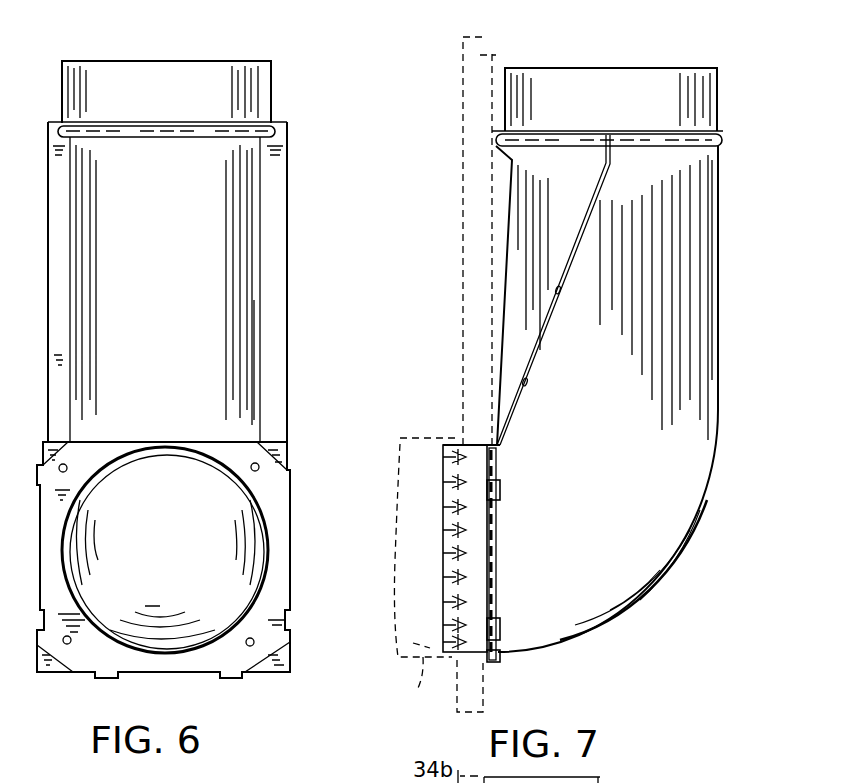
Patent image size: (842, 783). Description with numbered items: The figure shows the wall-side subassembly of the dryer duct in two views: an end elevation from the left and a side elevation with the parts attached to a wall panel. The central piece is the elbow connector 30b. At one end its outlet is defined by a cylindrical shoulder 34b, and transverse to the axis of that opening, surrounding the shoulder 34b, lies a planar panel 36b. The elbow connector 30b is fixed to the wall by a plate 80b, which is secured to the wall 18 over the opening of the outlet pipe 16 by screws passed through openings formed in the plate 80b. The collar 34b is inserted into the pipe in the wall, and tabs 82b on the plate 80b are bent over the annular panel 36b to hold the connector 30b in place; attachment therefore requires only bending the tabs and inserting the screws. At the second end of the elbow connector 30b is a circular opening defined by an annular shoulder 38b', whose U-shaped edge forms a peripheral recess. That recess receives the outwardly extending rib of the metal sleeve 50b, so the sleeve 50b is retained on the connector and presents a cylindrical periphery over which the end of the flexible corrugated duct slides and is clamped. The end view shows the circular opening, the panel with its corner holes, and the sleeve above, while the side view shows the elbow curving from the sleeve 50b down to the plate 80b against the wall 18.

In FIG. 7, the outlet pipe 16 is at (413, 692).
In FIG. 7, the wall 18 is at (497, 56).
In FIG. 6, the elbow connector 30b is at (252, 316).
In FIG. 7, the elbow connector 30b is at (703, 485).
In FIG. 6, the cylindrical shoulder 34b is at (268, 555).
In FIG. 7, the cylindrical shoulder 34b is at (453, 438).
In FIG. 7, the planar panel 36b is at (496, 562).
In FIG. 6, the annular shoulder 38b' is at (201, 134).
In FIG. 6, the metal sleeve 50b is at (271, 87).
In FIG. 7, the metal sleeve 50b is at (710, 115).
In FIG. 6, the plate 80b is at (277, 592).
In FIG. 7, the plate 80b is at (493, 540).
In FIG. 7, the tabs 82b is at (498, 632).